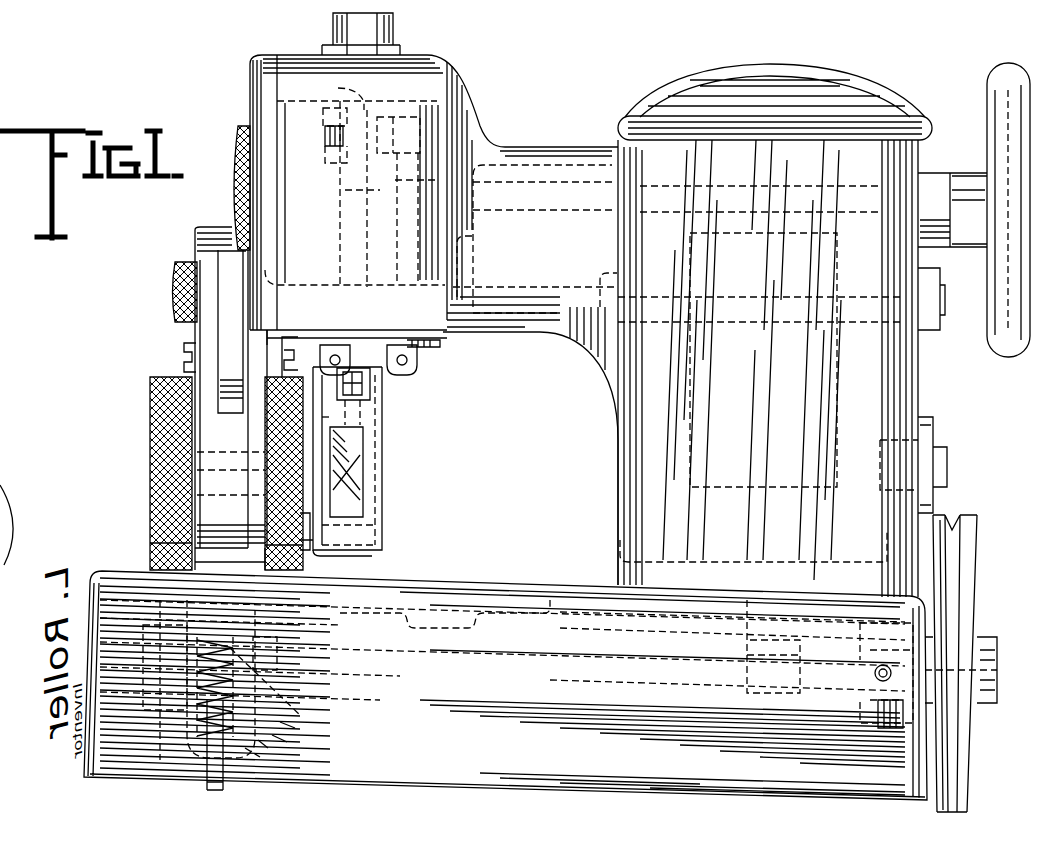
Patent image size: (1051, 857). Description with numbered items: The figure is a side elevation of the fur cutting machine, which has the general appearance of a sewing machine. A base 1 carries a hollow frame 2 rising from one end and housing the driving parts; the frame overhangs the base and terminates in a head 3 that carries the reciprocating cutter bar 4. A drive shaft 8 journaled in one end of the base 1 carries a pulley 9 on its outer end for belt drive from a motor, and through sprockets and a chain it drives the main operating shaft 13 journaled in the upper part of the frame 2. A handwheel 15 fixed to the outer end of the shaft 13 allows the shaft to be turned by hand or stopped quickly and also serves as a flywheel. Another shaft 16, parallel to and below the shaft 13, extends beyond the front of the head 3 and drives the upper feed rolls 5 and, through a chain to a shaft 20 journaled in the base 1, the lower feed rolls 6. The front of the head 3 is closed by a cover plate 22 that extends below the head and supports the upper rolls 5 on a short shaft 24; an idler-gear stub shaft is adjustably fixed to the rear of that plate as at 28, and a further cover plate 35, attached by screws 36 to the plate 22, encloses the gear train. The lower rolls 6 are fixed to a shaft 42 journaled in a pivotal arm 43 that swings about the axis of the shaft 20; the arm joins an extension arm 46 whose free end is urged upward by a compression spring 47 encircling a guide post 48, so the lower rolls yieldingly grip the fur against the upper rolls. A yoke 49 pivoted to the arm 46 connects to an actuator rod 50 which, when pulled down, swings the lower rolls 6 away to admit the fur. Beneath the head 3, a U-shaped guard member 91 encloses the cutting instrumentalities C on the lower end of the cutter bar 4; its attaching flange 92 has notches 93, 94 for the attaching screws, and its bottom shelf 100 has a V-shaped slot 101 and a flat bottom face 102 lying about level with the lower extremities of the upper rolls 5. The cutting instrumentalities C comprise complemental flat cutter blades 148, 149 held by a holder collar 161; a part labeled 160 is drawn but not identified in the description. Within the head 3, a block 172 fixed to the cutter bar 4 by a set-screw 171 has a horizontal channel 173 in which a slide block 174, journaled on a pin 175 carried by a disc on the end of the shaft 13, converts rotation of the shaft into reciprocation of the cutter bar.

The base 1 is at (548, 603).
The frame 2 is at (570, 157).
The head 3 is at (303, 72).
The cutter bar 4 is at (355, 232).
The upper feed rolls 5 is at (155, 490).
The lower feed rolls 6 is at (155, 560).
The drive shaft 8 is at (985, 666).
The pulley 9 is at (955, 583).
The main operating shaft 13 is at (589, 198).
The handwheel 15 is at (988, 111).
The shaft 16 is at (322, 278).
The shaft 20 is at (374, 634).
The cover plate 22 is at (263, 92).
The short shaft 24 is at (152, 462).
The adjustable fixing of stub shaft 28 is at (316, 357).
The cover plate 35 is at (208, 240).
The screws 36 is at (186, 352).
The shaft 42 is at (262, 683).
The pivotal arm 43 is at (300, 712).
The extension arm 46 is at (295, 728).
The compression spring 47 is at (287, 742).
The guide post 48 is at (268, 748).
The yoke 49 is at (260, 757).
The actuator rod 50 is at (213, 768).
The guard member 91 is at (383, 475).
The attaching flange 92 is at (433, 344).
The notch 93 is at (372, 382).
The notch 94 is at (425, 358).
The shelf 100 is at (375, 546).
The V-shaped slot 101 is at (375, 527).
The bottom face 102 is at (373, 556).
The cutter blade 148 is at (340, 446).
The cutter blade 149 is at (345, 492).
The pin 160 is at (333, 417).
The holder collar 161 is at (378, 392).
The set-screw 171 is at (326, 136).
The block 172 is at (324, 120).
The channel 173 is at (393, 122).
The slide block 174 is at (339, 88).
The pin 175 is at (472, 112).
The cutting instrumentalities C is at (345, 190).